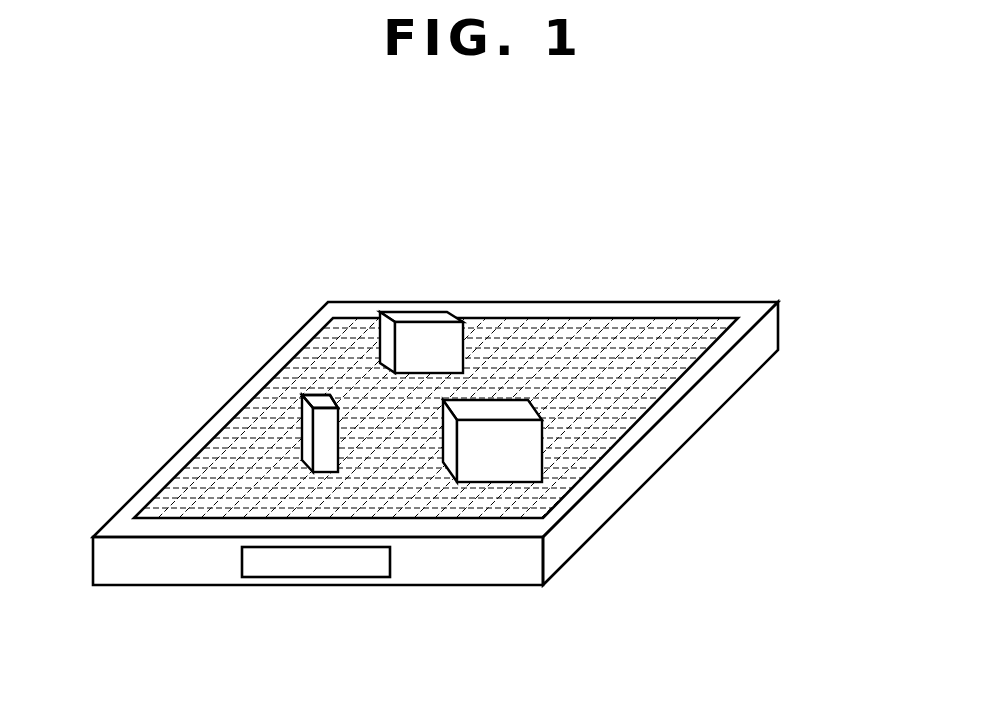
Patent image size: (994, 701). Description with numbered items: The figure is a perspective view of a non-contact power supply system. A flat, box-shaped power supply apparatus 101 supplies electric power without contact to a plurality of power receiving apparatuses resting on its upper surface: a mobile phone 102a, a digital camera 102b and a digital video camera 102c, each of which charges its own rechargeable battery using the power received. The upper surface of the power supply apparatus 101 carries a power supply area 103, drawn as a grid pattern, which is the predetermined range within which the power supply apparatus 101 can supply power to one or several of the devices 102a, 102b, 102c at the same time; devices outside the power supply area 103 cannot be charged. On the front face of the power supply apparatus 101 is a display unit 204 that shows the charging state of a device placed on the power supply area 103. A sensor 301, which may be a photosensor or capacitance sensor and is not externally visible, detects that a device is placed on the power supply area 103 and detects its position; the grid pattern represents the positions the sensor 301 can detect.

The power supply apparatus 101 is at (728, 301).
The mobile phone 102a is at (440, 312).
The digital camera 102b is at (543, 470).
The digital video camera 102c is at (318, 395).
The power supply area 103 is at (237, 487).
The display unit 204 is at (390, 562).
The sensor 301 is at (318, 393).